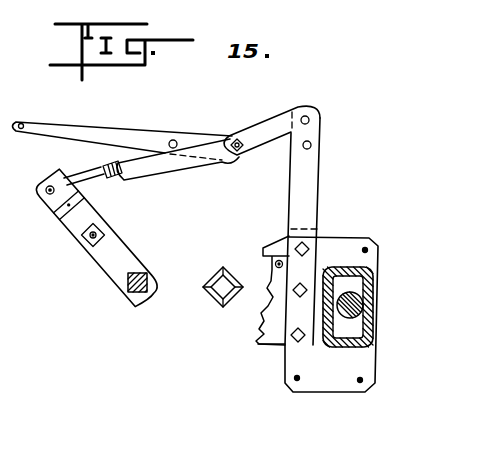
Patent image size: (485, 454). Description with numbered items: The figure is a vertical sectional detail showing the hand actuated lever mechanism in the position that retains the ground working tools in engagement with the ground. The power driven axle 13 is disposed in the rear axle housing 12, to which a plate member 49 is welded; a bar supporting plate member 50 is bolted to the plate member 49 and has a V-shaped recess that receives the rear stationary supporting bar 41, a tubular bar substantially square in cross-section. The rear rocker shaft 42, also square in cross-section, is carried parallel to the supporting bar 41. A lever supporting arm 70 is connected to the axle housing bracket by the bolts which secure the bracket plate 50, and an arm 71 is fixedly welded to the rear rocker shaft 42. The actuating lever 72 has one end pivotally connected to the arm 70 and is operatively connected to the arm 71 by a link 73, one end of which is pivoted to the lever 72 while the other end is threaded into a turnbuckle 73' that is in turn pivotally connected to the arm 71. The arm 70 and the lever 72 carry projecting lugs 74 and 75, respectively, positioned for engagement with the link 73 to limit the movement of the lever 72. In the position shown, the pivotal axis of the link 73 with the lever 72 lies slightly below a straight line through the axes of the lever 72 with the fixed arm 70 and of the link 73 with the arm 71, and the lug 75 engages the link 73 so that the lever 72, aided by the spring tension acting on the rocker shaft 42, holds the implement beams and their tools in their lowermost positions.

The rear axle housing 12 is at (378, 282).
The power driven axle 13 is at (351, 318).
The rear stationary supporting bar 41 is at (215, 273).
The rear rocker shaft 42 is at (133, 292).
The plate member 49 is at (352, 237).
The bar supporting plate member 50 is at (262, 338).
The arm 70 is at (318, 187).
The arm 71 is at (92, 258).
The actuating lever 72 is at (43, 118).
The link 73 is at (178, 175).
The turnbuckle 73' is at (98, 187).
The projecting lug 74 is at (311, 150).
The projecting lug 75 is at (170, 141).